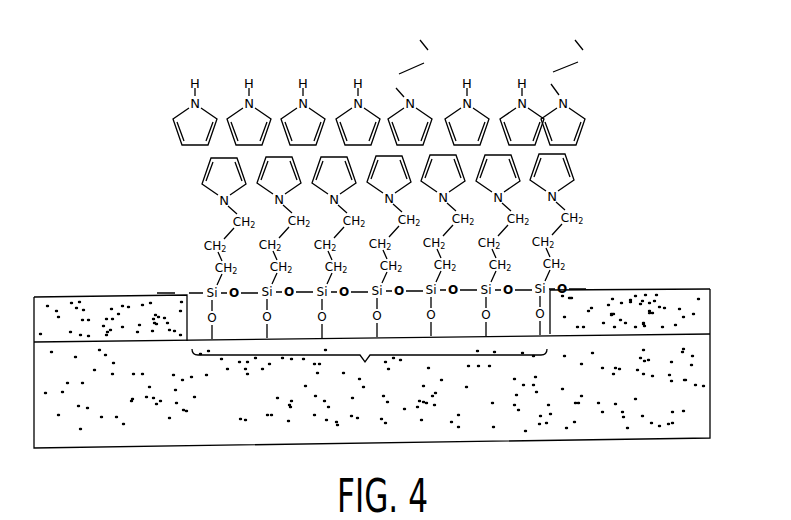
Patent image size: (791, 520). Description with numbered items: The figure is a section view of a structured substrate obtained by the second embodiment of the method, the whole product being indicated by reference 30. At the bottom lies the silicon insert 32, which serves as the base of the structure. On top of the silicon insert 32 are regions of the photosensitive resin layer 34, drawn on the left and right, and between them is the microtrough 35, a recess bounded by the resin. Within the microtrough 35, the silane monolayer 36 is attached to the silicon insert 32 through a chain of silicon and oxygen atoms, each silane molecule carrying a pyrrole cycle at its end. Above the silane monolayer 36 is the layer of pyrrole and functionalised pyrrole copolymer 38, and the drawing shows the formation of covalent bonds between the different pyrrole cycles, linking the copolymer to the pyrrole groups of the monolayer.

The sensor structure 30 is at (390, 255).
The silicon insert 32 is at (641, 428).
The photosensitive resin layer 34 is at (624, 300).
The microtrough 35 is at (333, 272).
The silane monolayer 36 is at (198, 245).
The layer of pyrrole and functionalised pyrrole copolymer 38 is at (175, 135).